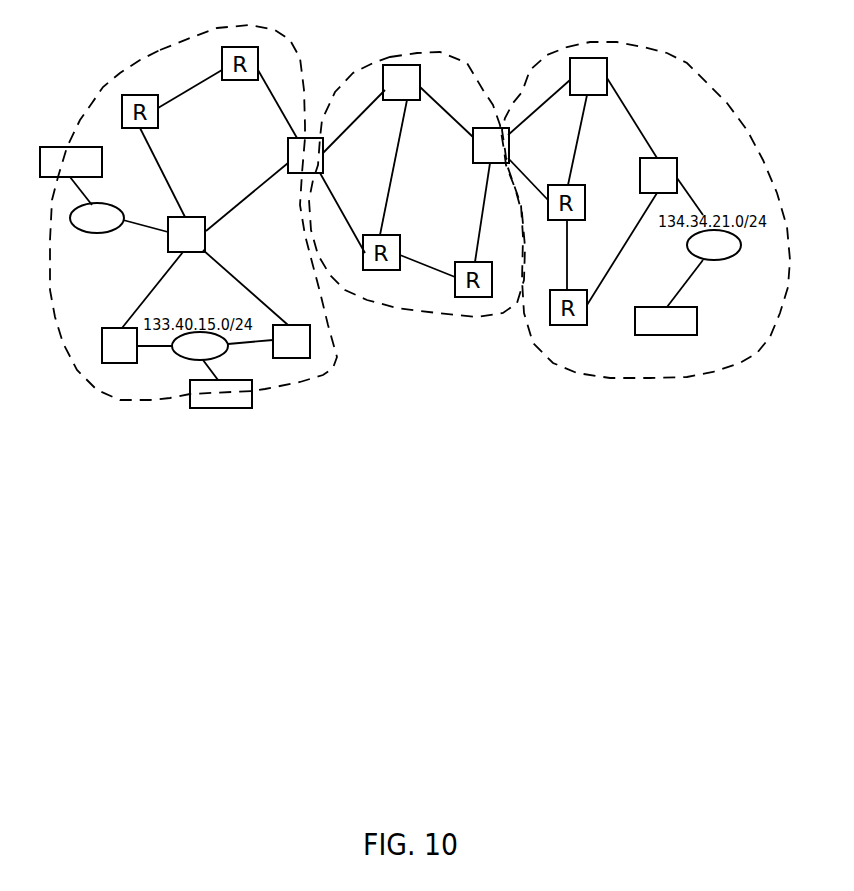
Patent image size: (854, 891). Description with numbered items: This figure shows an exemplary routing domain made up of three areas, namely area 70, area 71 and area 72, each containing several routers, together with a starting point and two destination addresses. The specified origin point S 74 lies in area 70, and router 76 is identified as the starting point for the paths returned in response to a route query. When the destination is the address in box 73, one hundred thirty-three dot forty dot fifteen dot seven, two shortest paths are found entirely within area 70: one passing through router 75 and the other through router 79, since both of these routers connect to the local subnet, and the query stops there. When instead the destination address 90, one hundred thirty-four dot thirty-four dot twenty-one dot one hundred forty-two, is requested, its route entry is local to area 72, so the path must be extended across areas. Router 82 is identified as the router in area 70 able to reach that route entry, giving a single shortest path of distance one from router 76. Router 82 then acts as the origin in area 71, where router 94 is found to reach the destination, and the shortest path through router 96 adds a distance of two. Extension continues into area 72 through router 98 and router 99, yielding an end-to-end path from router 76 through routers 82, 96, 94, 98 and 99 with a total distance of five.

The area 70 is at (193, 212).
The area 71 is at (417, 171).
The area 72 is at (646, 208).
The destination address box 73 is at (189, 393).
The origin point S 74 is at (106, 160).
The router 75 is at (101, 328).
The router 76 is at (200, 215).
The router 79 is at (303, 324).
The router 82 is at (284, 148).
The destination address 90 is at (700, 321).
The router 94 is at (475, 166).
The router 96 is at (394, 102).
The router 98 is at (610, 65).
The router 99 is at (680, 160).